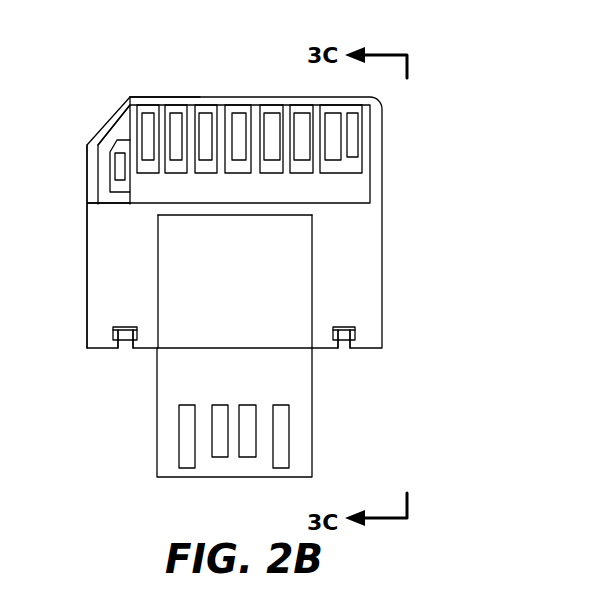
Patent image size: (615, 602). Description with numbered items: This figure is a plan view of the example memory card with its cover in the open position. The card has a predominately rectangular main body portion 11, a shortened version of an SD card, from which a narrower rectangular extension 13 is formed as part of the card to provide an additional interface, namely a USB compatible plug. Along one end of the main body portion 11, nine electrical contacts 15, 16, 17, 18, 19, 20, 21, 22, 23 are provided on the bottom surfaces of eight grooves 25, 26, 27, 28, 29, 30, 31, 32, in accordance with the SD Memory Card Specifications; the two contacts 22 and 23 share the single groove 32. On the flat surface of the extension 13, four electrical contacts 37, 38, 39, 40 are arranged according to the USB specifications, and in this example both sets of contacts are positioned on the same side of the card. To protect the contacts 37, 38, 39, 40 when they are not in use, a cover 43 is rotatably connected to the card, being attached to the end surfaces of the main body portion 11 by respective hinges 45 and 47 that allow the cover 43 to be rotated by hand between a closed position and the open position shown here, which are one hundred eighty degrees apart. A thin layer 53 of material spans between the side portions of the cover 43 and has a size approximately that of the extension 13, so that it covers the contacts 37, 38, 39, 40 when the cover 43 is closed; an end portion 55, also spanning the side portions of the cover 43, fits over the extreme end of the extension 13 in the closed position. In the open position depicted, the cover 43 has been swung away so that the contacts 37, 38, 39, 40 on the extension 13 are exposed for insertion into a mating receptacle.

The main body portion 11 is at (72, 164).
The rectangular extension 13 is at (318, 446).
The electrical contact 15 is at (117, 182).
The electrical contact 16 is at (147, 157).
The electrical contact 17 is at (178, 157).
The electrical contact 18 is at (207, 110).
The electrical contact 19 is at (245, 115).
The electrical contact 20 is at (272, 160).
The electrical contact 21 is at (302, 160).
The electrical contact 22 is at (353, 157).
The electrical contact 23 is at (333, 157).
The groove 25 is at (113, 126).
The groove 26 is at (139, 98).
The groove 27 is at (150, 111).
The groove 28 is at (178, 108).
The groove 29 is at (234, 113).
The groove 30 is at (263, 112).
The groove 31 is at (308, 112).
The groove 32 is at (345, 112).
The electrical contact 37 is at (187, 462).
The electrical contact 38 is at (220, 447).
The electrical contact 39 is at (248, 447).
The electrical contact 40 is at (281, 462).
The cover 43 is at (388, 299).
The hinge 45 is at (125, 341).
The hinge 47 is at (344, 341).
The thin layer 53 is at (250, 292).
The end portion 55 is at (205, 214).